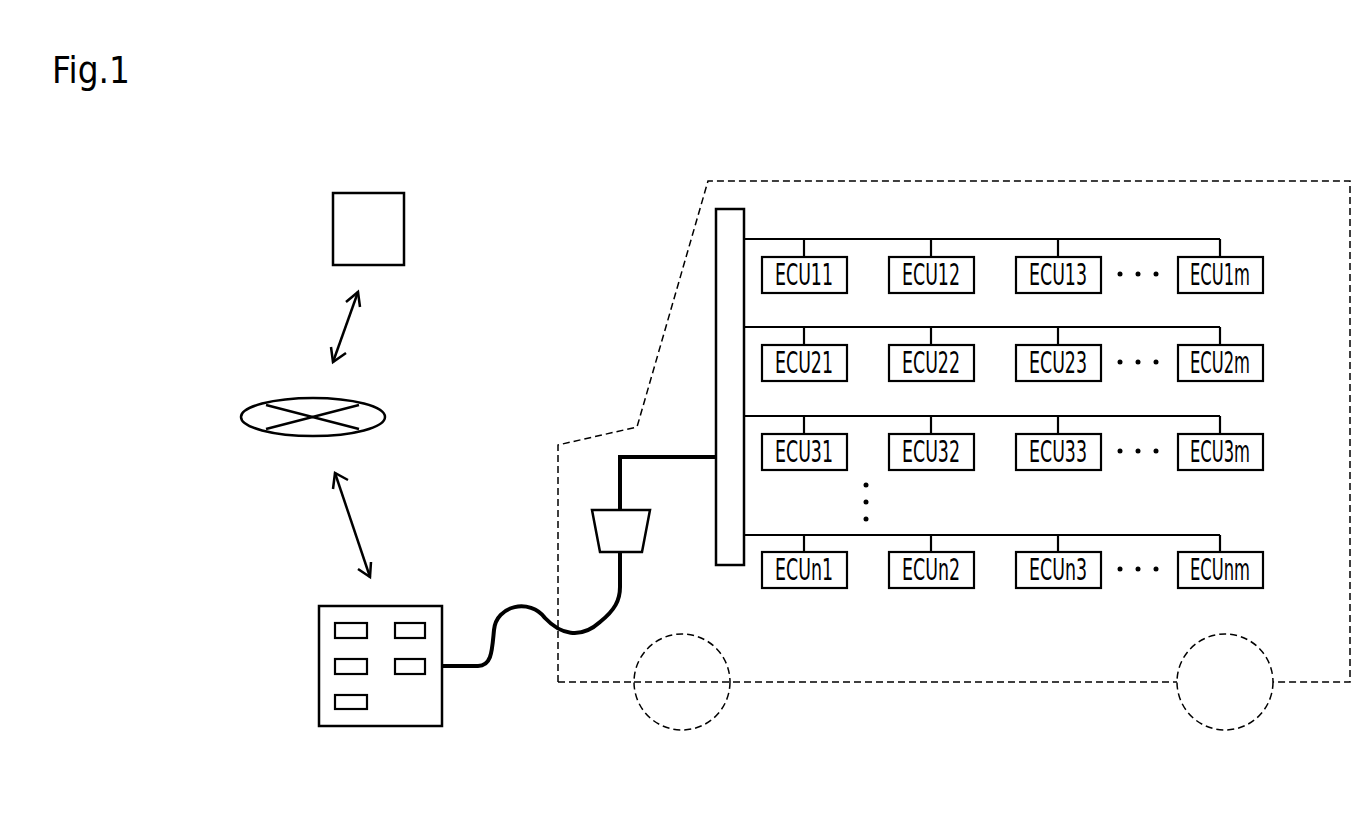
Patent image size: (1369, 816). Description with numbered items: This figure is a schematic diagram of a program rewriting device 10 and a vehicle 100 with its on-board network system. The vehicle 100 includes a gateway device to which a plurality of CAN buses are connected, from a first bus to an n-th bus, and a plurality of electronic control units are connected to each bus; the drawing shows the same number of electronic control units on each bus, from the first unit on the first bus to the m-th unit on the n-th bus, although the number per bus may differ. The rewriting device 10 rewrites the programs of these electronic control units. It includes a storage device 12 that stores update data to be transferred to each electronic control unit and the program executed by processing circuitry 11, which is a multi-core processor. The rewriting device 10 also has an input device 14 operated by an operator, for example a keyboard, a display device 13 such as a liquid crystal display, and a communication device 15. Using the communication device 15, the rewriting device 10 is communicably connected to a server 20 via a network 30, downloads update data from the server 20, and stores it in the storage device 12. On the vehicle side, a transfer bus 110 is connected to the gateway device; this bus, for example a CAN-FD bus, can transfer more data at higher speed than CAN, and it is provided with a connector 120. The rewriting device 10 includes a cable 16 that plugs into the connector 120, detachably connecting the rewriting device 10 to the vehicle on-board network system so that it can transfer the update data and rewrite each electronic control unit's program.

The rewriting device 10 is at (331, 606).
The processing circuitry 11 is at (335, 630).
The storage device 12 is at (335, 666).
The display device 13 is at (335, 701).
The input device 14 is at (407, 623).
The communication device 15 is at (410, 674).
The cable 16 is at (483, 668).
The server 20 is at (375, 193).
The network 30 is at (345, 400).
The vehicle 100 is at (688, 243).
The transfer bus 110 is at (666, 457).
The connector 120 is at (648, 537).